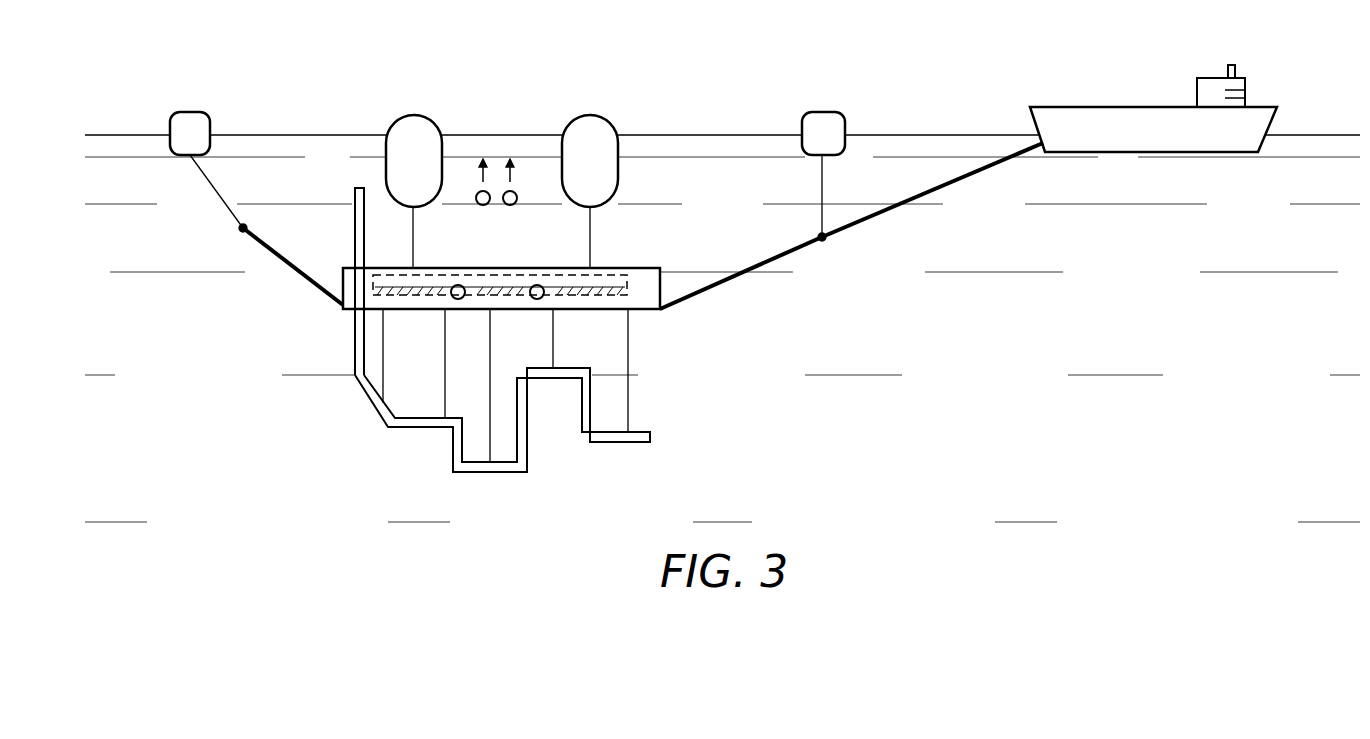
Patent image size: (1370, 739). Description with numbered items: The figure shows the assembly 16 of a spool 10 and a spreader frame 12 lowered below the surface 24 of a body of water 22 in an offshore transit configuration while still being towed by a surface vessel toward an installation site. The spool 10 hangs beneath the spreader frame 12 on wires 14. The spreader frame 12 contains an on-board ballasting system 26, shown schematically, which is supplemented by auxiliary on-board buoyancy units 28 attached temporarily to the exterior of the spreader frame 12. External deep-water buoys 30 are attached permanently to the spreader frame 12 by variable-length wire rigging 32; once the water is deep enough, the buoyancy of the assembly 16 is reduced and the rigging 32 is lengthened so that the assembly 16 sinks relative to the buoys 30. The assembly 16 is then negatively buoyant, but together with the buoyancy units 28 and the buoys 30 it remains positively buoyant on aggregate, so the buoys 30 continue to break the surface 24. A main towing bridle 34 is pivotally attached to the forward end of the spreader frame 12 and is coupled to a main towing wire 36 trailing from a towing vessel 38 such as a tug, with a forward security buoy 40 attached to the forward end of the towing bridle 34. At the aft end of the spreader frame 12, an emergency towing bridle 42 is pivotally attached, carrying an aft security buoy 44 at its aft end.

The spool 10 is at (355, 337).
The spreader frame 12 is at (660, 268).
The wires 14 is at (628, 348).
The assembly 16 is at (347, 408).
The body of water 22 is at (957, 340).
The surface 24 is at (99, 135).
The on-board ballasting system 26 is at (600, 297).
The auxiliary on-board buoyancy units 28 is at (460, 285).
The external deep-water buoys 30 is at (413, 115).
The wire rigging 32 is at (413, 237).
The main towing bridle 34 is at (752, 285).
The main towing wire 36 is at (960, 185).
The towing vessel 38 is at (1038, 107).
The forward security buoy 40 is at (822, 112).
The emergency towing bridle 42 is at (283, 273).
The aft security buoy 44 is at (190, 112).